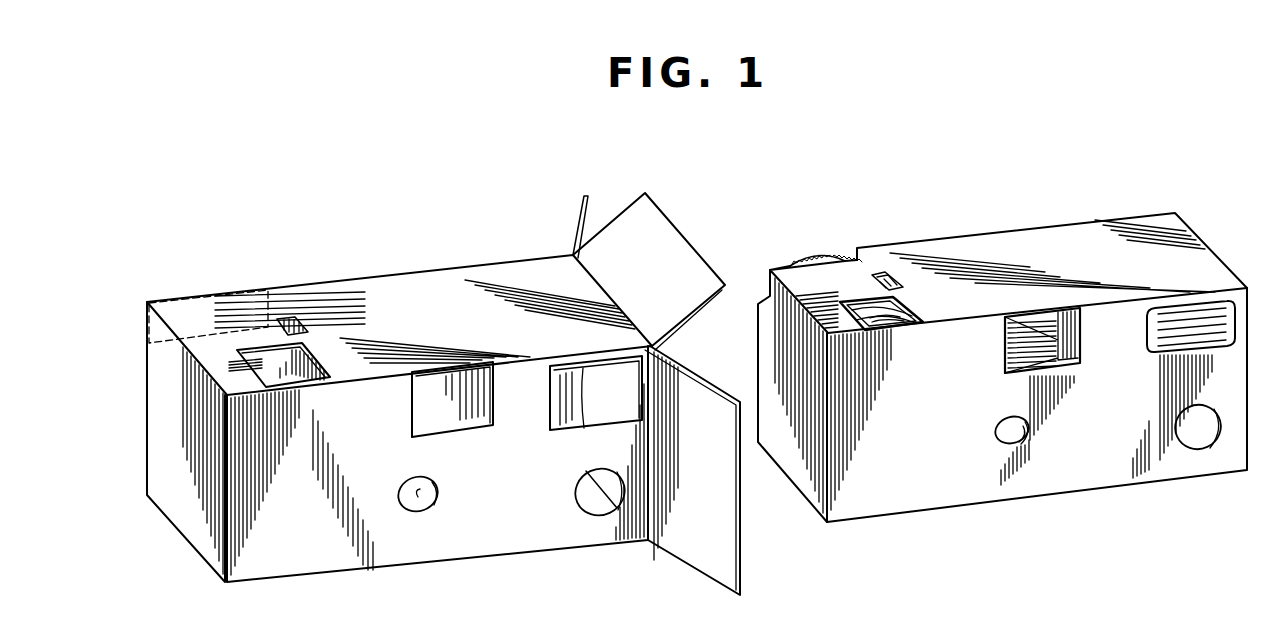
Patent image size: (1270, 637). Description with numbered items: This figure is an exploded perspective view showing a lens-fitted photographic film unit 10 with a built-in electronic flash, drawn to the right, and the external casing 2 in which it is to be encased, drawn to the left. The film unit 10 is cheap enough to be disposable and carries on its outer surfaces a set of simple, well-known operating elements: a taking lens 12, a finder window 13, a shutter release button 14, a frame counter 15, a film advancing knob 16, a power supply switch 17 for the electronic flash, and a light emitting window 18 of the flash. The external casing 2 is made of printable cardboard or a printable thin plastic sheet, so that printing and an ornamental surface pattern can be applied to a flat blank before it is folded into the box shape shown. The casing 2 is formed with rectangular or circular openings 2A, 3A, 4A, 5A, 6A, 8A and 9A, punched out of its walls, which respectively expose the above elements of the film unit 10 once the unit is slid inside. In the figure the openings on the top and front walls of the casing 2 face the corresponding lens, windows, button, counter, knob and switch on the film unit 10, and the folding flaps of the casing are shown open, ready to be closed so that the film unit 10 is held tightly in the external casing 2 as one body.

The external casing 2 is at (398, 252).
The opening 2A is at (432, 506).
The opening 3A is at (412, 397).
The opening 4A is at (312, 360).
The opening 5A is at (290, 318).
The opening 6A is at (207, 310).
The opening 8A is at (590, 425).
The opening 9A is at (582, 496).
The lens-fitted photographic film unit 10 is at (1017, 205).
The taking lens 12 is at (1005, 426).
The finder window 13 is at (1070, 340).
The shutter release button 14 is at (887, 332).
The frame counter 15 is at (882, 272).
The film advancing knob 16 is at (815, 256).
The power supply switch 17 is at (1198, 448).
The light emitting window 18 is at (1222, 313).